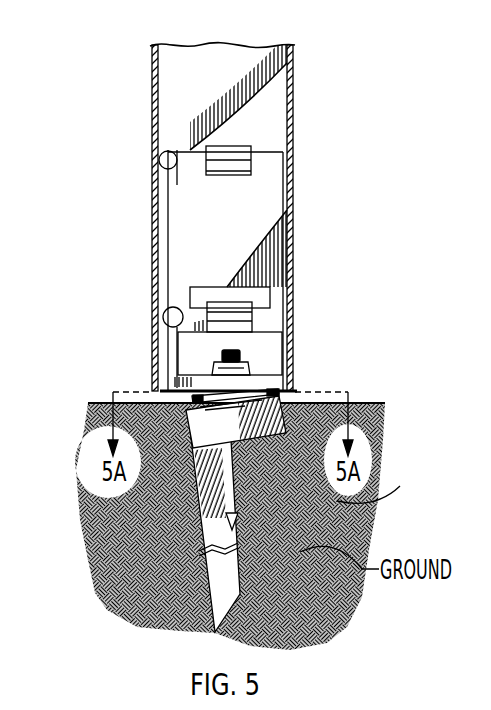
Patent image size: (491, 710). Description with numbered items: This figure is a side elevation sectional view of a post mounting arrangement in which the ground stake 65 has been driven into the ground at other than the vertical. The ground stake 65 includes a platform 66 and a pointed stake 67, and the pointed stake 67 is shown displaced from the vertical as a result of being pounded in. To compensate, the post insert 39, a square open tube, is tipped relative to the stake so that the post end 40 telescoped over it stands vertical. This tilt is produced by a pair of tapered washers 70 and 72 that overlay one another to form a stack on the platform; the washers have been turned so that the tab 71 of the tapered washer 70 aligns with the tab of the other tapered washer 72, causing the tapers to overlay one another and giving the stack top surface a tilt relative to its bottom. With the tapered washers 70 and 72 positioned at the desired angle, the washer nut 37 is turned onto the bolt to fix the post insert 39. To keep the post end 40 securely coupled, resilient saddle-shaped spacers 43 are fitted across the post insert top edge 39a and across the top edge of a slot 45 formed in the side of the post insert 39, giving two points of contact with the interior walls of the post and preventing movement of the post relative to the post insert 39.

The post end 40 is at (134, 126).
The spacers 43 is at (177, 150).
The post insert top edge 39a is at (283, 61).
The post insert 39 is at (242, 223).
The slot 45 is at (258, 288).
The washer nut 37 is at (243, 362).
The tapered washer 70 is at (193, 399).
The tab 71 is at (250, 395).
The tapered washer 72 is at (262, 404).
The ground stake 65 is at (148, 500).
The platform 66 is at (376, 480).
The pointed stake 67 is at (213, 580).